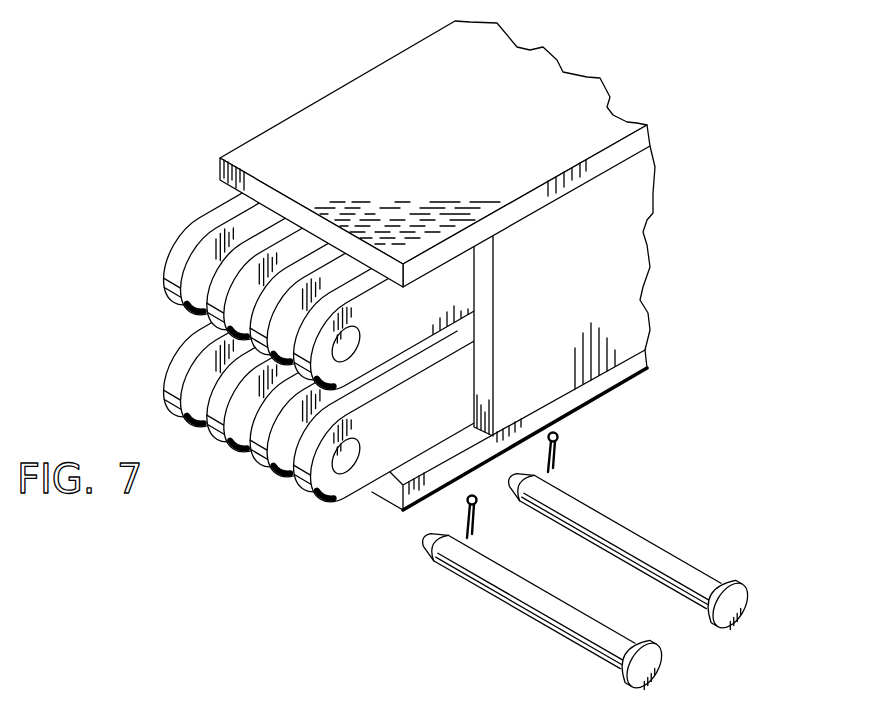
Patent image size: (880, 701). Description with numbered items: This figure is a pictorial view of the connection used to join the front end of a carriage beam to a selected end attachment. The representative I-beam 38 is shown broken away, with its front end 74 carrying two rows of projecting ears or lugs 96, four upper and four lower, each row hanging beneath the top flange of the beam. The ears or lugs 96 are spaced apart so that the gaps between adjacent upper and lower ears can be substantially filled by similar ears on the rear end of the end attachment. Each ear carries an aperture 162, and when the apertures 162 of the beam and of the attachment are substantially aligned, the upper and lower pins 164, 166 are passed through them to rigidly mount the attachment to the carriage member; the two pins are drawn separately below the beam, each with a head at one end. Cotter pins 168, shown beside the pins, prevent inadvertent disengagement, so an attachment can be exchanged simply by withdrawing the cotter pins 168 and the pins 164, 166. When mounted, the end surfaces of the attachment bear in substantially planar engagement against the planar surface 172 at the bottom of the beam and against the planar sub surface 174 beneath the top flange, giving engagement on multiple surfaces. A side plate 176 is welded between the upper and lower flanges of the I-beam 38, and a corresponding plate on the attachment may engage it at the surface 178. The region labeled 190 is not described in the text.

The I-beam 38 is at (430, 88).
The front end 74 is at (247, 157).
The lower hinge knuckles 190 is at (222, 183).
The planar sub surface 174 is at (306, 232).
The ears or lugs 96 is at (193, 278).
The surface 178 is at (484, 328).
The side plates 176 is at (627, 317).
The apertures 162 is at (384, 424).
The planar surface 172 is at (397, 495).
The cotter pins 168 is at (560, 457).
The upper pin 164 is at (647, 547).
The lower pin 166 is at (507, 580).